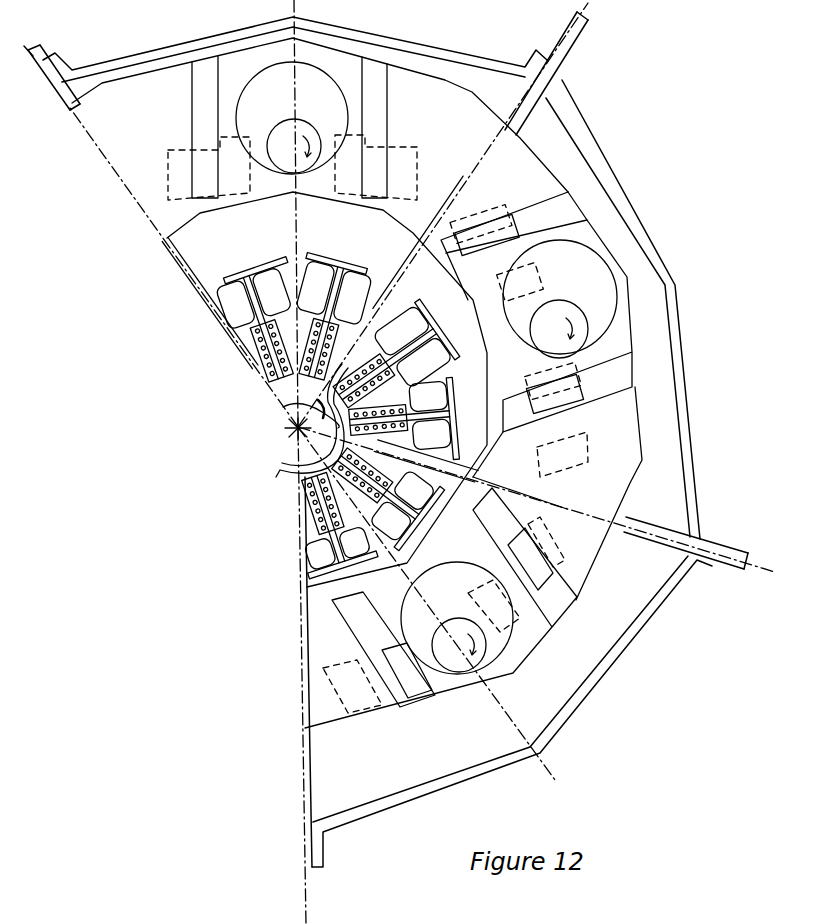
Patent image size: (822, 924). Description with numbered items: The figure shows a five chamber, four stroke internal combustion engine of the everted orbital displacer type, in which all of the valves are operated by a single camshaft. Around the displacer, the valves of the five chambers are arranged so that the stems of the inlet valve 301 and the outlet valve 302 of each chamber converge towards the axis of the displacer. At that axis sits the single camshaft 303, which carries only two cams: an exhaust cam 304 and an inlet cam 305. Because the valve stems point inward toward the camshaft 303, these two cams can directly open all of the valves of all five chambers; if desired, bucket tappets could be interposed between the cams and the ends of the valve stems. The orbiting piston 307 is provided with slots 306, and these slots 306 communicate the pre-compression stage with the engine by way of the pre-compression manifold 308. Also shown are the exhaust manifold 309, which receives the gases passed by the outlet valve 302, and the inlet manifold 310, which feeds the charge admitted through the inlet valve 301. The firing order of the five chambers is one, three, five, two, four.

The inlet valve 301 is at (266, 250).
The outlet valve 302 is at (362, 253).
The camshaft 303 is at (290, 426).
The exhaust cam 304 is at (283, 402).
The inlet cam 305 is at (291, 452).
The slots 306 is at (589, 293).
The orbiting piston 307 is at (592, 485).
The pre-compression manifold 308 is at (213, 302).
The exhaust manifold 309 is at (328, 554).
The inlet manifold 310 is at (405, 165).